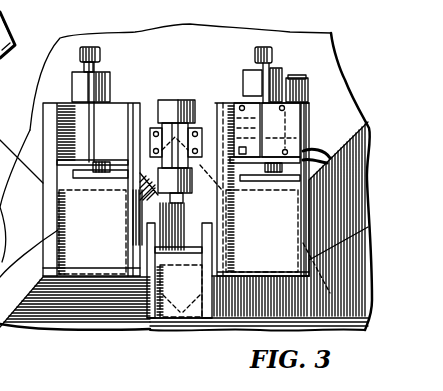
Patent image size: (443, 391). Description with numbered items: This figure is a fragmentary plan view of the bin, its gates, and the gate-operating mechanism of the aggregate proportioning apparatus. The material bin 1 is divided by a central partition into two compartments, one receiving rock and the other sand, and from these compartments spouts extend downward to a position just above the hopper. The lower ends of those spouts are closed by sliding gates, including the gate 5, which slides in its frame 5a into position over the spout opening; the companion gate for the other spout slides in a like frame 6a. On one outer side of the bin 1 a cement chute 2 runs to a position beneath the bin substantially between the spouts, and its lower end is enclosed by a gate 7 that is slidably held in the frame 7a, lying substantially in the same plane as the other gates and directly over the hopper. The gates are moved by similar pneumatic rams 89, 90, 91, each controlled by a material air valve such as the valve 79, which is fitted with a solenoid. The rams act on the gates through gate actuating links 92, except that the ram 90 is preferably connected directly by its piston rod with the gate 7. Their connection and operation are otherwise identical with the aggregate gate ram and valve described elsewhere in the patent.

The material bin 1 is at (218, 50).
The cement chute 2 is at (240, 298).
The bin gate 5 is at (274, 228).
The gate frame 5a is at (323, 139).
The gate frame 6a is at (57, 210).
The bin gate 7 is at (160, 293).
The gate frame 7a is at (148, 292).
The material air valve 79 is at (299, 78).
The pneumatic ram 89 is at (111, 82).
The pneumatic ram 90 is at (167, 104).
The pneumatic ram 91 is at (243, 81).
The gate actuating link 92 is at (110, 85).